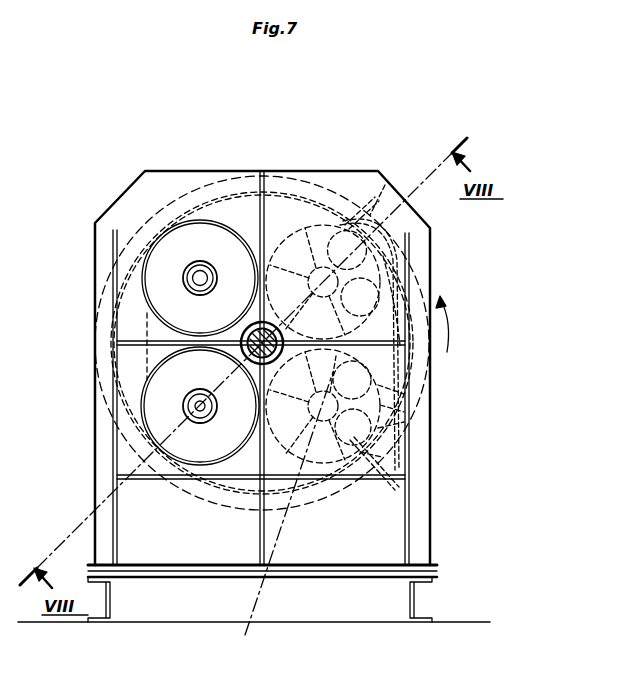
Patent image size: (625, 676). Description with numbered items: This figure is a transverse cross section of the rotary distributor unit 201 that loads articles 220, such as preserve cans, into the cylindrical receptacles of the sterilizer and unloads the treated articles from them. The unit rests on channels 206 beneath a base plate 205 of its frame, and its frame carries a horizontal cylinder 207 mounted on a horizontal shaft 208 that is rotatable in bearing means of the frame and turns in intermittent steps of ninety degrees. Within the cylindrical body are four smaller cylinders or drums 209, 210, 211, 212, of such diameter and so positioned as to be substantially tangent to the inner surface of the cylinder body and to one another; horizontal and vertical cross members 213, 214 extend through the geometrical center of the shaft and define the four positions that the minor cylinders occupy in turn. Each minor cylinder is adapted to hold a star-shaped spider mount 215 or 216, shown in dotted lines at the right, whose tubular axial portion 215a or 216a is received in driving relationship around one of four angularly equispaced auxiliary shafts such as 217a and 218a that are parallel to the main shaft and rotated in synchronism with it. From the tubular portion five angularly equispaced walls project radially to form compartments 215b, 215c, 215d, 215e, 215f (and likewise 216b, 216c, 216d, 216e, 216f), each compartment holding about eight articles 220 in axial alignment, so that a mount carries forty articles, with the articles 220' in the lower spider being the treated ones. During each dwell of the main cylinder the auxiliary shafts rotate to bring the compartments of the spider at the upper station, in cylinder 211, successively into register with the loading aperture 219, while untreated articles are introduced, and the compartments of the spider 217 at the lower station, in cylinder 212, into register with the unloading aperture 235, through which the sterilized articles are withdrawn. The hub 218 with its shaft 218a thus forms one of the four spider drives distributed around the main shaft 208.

The distributor unit 201 is at (434, 268).
The frame 205 is at (340, 578).
The channel member 206 is at (110, 612).
The horizontal cylinder 207 is at (413, 412).
The horizontal shaft 208 is at (244, 355).
The minor cylinder 209 is at (137, 390).
The minor cylinder 210 is at (199, 221).
The minor cylinder 211 is at (300, 226).
The minor cylinder 212 is at (283, 511).
The horizontal cross member 213 is at (464, 324).
The vertical cross member 214 is at (256, 186).
The spider mount 215 is at (331, 214).
The tubular axial portion 215a is at (412, 288).
The compartment 215b is at (299, 253).
The compartment 215c is at (304, 284).
The compartment 215d is at (315, 314).
The compartment 215e is at (432, 348).
The compartment 215f is at (393, 252).
The spider mount 216 is at (330, 479).
The tubular portion 216a is at (410, 493).
The arm 216b is at (303, 377).
The center shaft 216c is at (304, 408).
The arm 216d is at (315, 438).
The guide 216e is at (404, 422).
The guide 216f is at (404, 394).
The spider mount 217 is at (213, 452).
The auxiliary shaft 217a is at (199, 412).
The reel hub 218 is at (168, 307).
The auxiliary shaft 218a is at (182, 279).
The loading aperture 219 is at (396, 190).
The articles 220 is at (354, 274).
The roller 220' is at (353, 403).
The unloading aperture 235 is at (382, 457).